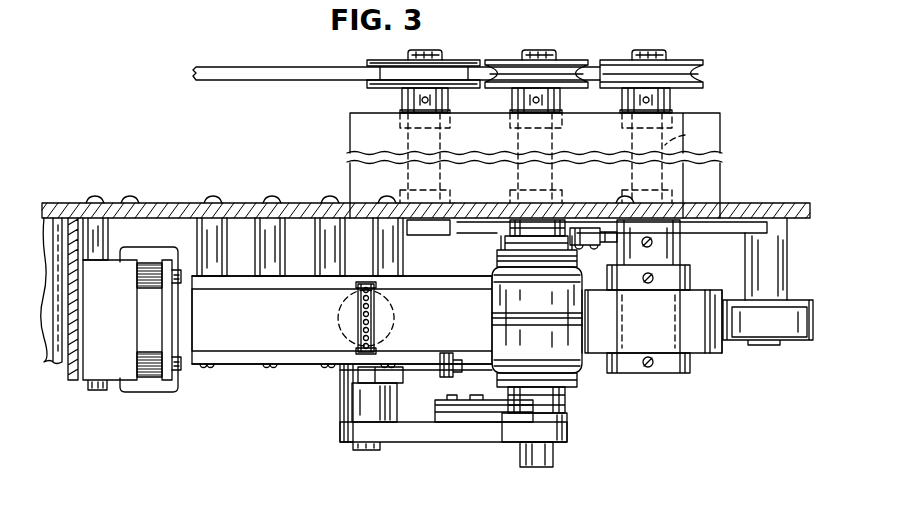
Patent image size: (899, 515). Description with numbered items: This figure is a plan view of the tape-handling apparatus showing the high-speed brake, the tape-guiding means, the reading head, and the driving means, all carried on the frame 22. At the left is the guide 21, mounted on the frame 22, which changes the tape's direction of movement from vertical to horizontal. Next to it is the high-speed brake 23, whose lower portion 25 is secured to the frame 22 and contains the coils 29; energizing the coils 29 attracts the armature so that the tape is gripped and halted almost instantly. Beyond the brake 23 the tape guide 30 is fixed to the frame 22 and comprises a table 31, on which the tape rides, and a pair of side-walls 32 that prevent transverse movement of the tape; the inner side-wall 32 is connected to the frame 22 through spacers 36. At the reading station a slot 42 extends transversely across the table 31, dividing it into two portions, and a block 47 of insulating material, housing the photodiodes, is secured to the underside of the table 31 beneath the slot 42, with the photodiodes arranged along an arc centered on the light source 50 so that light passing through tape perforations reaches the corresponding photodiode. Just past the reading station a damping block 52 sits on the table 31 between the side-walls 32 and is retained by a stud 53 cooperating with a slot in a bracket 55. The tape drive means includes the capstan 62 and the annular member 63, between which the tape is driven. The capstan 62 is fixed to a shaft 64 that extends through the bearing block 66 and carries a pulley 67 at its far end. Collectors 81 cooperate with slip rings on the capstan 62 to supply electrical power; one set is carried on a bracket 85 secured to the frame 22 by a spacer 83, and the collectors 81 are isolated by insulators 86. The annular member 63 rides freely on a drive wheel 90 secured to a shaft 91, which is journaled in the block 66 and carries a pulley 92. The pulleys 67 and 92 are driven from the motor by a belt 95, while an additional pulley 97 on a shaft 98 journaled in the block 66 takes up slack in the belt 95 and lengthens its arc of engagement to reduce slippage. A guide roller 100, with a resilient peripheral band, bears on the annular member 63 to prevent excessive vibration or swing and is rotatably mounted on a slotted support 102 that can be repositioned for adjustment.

The guide 21 is at (55, 363).
The frame 22 is at (152, 205).
The high-speed brake 23 is at (80, 382).
The lower portion 25 is at (114, 372).
The coils 29 is at (148, 247).
The tape guide 30 is at (231, 378).
The table 31 is at (193, 340).
The side-walls 32 is at (262, 283).
The spacers 36 is at (226, 233).
The slot 42 is at (359, 313).
The block 47 is at (359, 372).
The light source 50 is at (346, 341).
The damping block 52 is at (290, 340).
The stud 53 is at (443, 398).
The bracket 55 is at (439, 368).
The capstan 62 is at (582, 367).
The annular member 63 is at (717, 353).
The shaft 64 is at (547, 467).
The bearing block 66 is at (712, 178).
The pulley 67 is at (560, 62).
The collectors 81 is at (565, 233).
The spacer 83 is at (342, 402).
The bracket 85 is at (461, 433).
The insulators 86 is at (592, 227).
The drive wheel 90 is at (667, 367).
The shaft 91 is at (648, 53).
The pulley 92 is at (668, 62).
The belt 95 is at (283, 73).
The pulley 97 is at (445, 62).
The shaft 98 is at (402, 100).
The guide roller 100 is at (787, 334).
The slotted support 102 is at (735, 228).